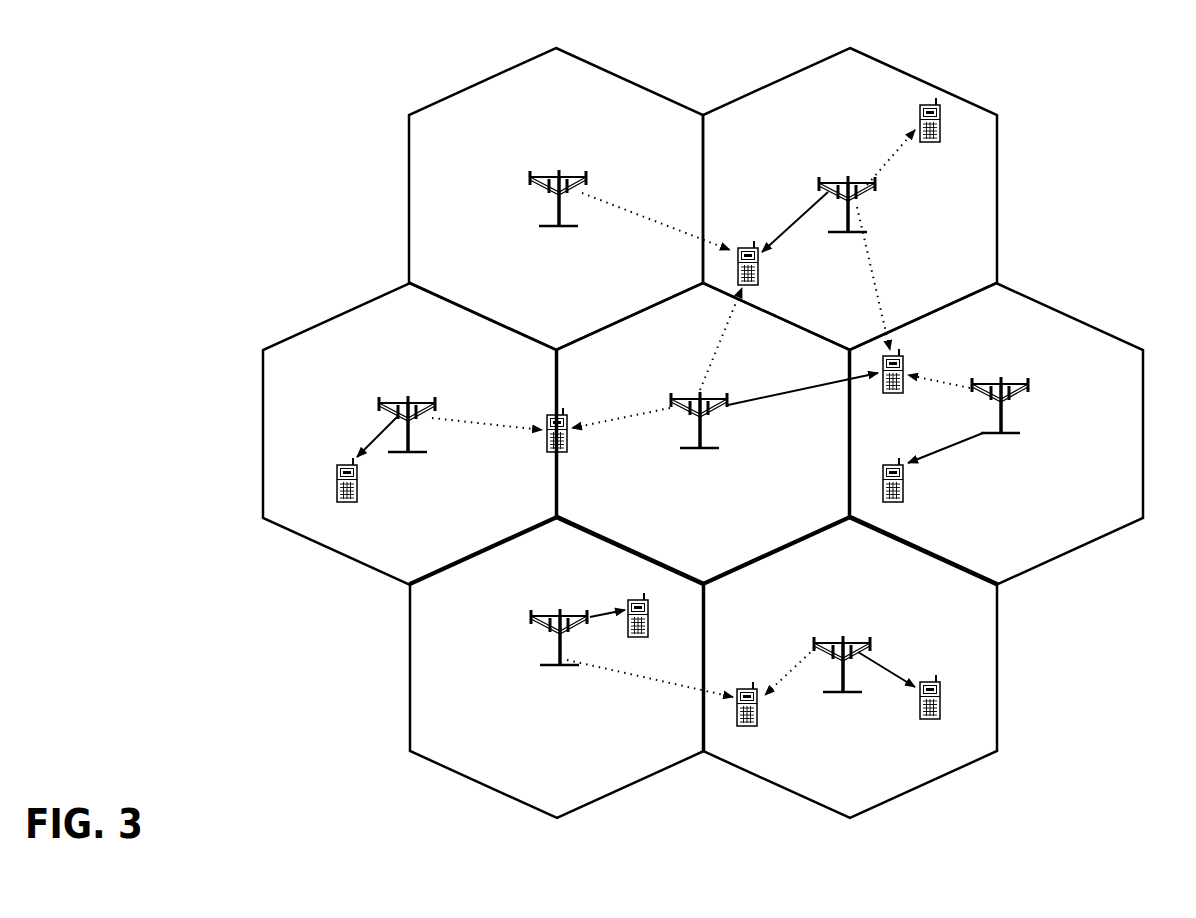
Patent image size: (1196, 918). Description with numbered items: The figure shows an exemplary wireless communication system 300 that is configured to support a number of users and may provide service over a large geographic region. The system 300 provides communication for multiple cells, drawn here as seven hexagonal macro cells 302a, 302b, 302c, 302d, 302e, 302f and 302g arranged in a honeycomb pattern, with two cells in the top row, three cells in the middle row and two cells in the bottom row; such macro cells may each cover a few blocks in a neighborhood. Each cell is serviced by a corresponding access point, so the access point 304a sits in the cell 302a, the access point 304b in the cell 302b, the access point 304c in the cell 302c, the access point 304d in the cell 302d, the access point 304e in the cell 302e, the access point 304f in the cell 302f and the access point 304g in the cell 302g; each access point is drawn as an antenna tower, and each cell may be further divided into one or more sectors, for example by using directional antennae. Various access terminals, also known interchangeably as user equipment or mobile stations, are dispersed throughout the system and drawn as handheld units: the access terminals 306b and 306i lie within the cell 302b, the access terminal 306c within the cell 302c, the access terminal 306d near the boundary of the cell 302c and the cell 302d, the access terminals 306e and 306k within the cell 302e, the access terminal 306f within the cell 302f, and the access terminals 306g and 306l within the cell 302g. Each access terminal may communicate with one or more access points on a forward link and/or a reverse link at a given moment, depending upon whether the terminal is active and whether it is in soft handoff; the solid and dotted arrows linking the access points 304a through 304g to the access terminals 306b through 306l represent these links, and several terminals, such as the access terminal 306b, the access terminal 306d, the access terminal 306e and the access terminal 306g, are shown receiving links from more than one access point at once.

The wireless communication system 300 is at (1107, 230).
The macro cell 302a is at (486, 82).
The macro cell 302b is at (937, 70).
The macro cell 302c is at (338, 313).
The macro cell 302d is at (723, 321).
The macro cell 302e is at (1083, 302).
The macro cell 302f is at (408, 673).
The macro cell 302g is at (995, 672).
The access point 304a is at (528, 177).
The access point 304b is at (820, 180).
The access point 304c is at (397, 400).
The access point 304d is at (670, 395).
The access point 304e is at (1030, 386).
The access point 304f is at (528, 618).
The access point 304g is at (815, 643).
The access terminal 306b is at (743, 250).
The access terminal 306c is at (337, 482).
The access terminal 306d is at (547, 420).
The access terminal 306e is at (907, 362).
The access terminal 306f is at (630, 600).
The access terminal 306g is at (743, 688).
The access terminal 306i is at (920, 112).
The access terminal 306k is at (887, 465).
The access terminal 306l is at (925, 682).